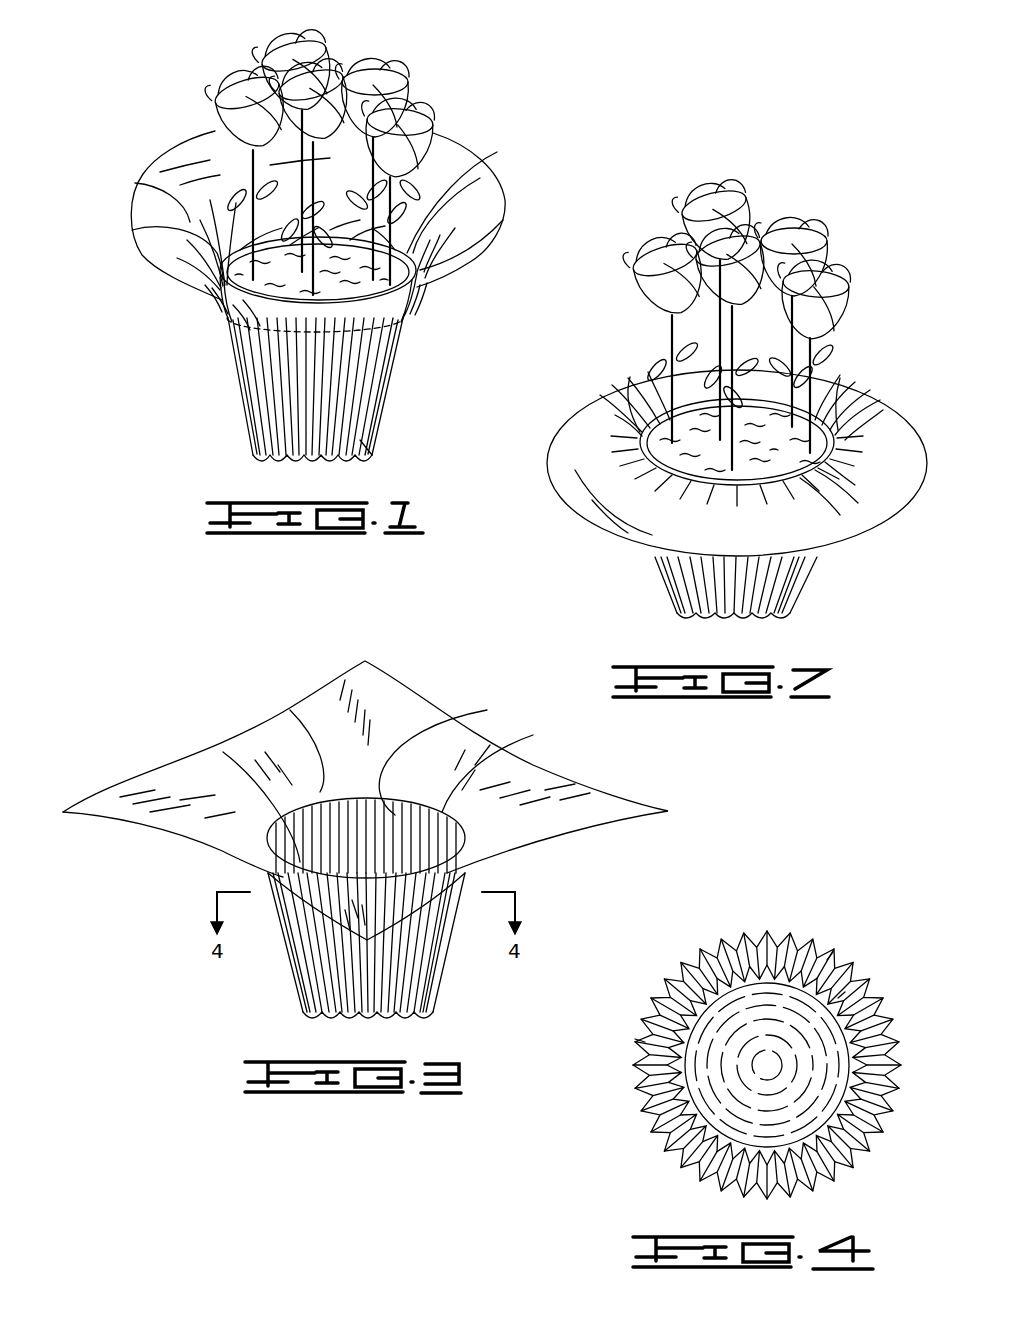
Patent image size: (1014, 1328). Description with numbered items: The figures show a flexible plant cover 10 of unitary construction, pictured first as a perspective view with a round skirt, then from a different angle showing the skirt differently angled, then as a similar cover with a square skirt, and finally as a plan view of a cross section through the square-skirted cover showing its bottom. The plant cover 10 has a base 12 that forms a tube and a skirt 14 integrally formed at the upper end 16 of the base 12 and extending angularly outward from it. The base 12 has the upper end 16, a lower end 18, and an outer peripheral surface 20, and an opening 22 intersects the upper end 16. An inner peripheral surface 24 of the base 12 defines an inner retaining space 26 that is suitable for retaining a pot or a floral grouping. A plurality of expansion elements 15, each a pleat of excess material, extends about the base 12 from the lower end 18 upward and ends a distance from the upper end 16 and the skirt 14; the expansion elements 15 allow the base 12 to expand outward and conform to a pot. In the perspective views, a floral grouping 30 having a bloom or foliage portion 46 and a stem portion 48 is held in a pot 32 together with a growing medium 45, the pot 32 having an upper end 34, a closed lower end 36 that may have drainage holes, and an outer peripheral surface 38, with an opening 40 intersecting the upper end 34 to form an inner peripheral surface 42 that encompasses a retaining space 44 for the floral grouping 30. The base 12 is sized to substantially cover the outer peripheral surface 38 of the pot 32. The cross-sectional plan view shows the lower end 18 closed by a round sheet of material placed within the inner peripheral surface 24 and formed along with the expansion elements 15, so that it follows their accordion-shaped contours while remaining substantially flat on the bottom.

In FIG. 1, the plant cover 10 is at (200, 48).
In FIG. 2, the plant cover 10 is at (868, 237).
In FIG. 1, the base 12 is at (412, 358).
In FIG. 2, the base 12 is at (822, 560).
In FIG. 3, the base 12 is at (453, 943).
In FIG. 4, the base 12 is at (768, 926).
In FIG. 1, the skirt 14 is at (512, 193).
In FIG. 2, the skirt 14 is at (885, 396).
In FIG. 3, the skirt 14 is at (569, 781).
In FIG. 1, the expansion element 15 is at (387, 333).
In FIG. 2, the expansion element 15 is at (787, 610).
In FIG. 3, the expansion element 15 is at (407, 992).
In FIG. 4, the expansion element 15 is at (833, 952).
In FIG. 1, the upper end 16 is at (502, 218).
In FIG. 3, the upper end 16 is at (290, 710).
In FIG. 1, the lower end 18 is at (258, 450).
In FIG. 2, the lower end 18 is at (682, 617).
In FIG. 3, the lower end 18 is at (315, 1015).
In FIG. 4, the lower end 18 is at (845, 992).
In FIG. 1, the outer peripheral surface 20 is at (247, 383).
In FIG. 2, the outer peripheral surface 20 is at (677, 585).
In FIG. 3, the outer peripheral surface 20 is at (310, 975).
In FIG. 4, the outer peripheral surface 20 is at (635, 1039).
In FIG. 1, the opening 22 is at (135, 183).
In FIG. 2, the opening 22 is at (883, 410).
In FIG. 3, the opening 22 is at (533, 735).
In FIG. 1, the inner peripheral surface 24 is at (177, 258).
In FIG. 2, the inner peripheral surface 24 is at (630, 377).
In FIG. 3, the inner peripheral surface 24 is at (523, 708).
In FIG. 4, the inner peripheral surface 24 is at (645, 1075).
In FIG. 1, the inner retaining space 26 is at (457, 167).
In FIG. 2, the inner retaining space 26 is at (840, 378).
In FIG. 3, the inner retaining space 26 is at (223, 752).
In FIG. 1, the floral grouping 30 is at (417, 46).
In FIG. 2, the floral grouping 30 is at (811, 229).
In FIG. 1, the pot 32 is at (422, 267).
In FIG. 2, the pot 32 is at (627, 437).
In FIG. 1, the upper end 34 is at (243, 317).
In FIG. 2, the upper end 34 is at (833, 458).
In FIG. 1, the lower end 36 is at (374, 450).
In FIG. 1, the outer peripheral surface 38 is at (362, 388).
In FIG. 1, the opening 40 is at (132, 230).
In FIG. 1, the inner peripheral surface 42 is at (480, 180).
In FIG. 1, the retaining space 44 is at (213, 283).
In FIG. 2, the retaining space 44 is at (837, 457).
In FIG. 1, the growing medium 45 is at (433, 282).
In FIG. 2, the growing medium 45 is at (830, 475).
In FIG. 1, the bloom or foliage portion 46 is at (418, 108).
In FIG. 2, the bloom or foliage portion 46 is at (853, 295).
In FIG. 1, the stem portion 48 is at (220, 147).
In FIG. 2, the stem portion 48 is at (672, 333).